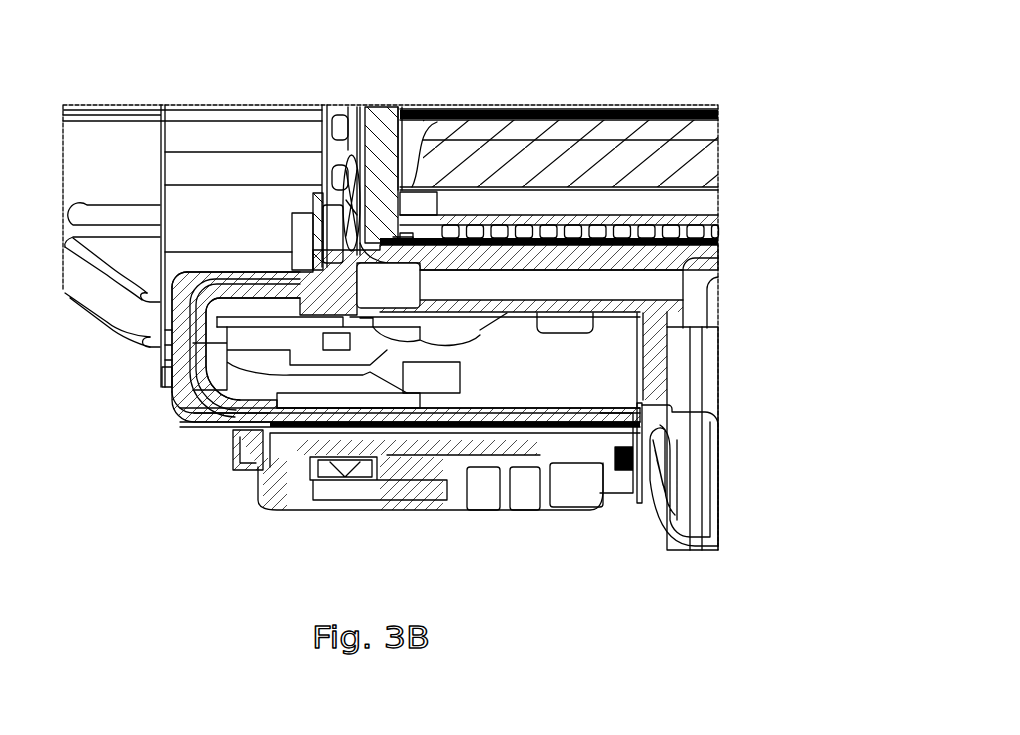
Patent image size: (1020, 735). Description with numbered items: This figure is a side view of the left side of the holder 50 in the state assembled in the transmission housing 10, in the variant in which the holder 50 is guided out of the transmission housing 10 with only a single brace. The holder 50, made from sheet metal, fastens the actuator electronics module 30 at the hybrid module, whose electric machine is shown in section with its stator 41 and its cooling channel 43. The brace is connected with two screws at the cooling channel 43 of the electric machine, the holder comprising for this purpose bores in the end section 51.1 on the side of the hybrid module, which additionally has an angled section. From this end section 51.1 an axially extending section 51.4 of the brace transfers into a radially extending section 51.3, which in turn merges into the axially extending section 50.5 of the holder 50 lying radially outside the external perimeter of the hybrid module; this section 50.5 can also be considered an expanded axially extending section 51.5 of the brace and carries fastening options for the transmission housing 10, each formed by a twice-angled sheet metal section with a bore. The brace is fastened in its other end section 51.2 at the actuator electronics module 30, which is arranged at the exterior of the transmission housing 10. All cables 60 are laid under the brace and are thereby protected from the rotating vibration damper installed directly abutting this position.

The transmission housing 10 is at (680, 350).
The actuator electronics module 30 is at (352, 488).
The stator 41 is at (687, 160).
The cooling channel 43 is at (375, 142).
The holder 50 is at (162, 343).
The axially extending section 50.5 is at (223, 425).
The end section 51.1 is at (252, 241).
The end section 51.2 is at (377, 433).
The radially extending section 51.3 is at (168, 397).
The axially extending section 51.4 is at (217, 275).
The expanded axially extending section 51.5 is at (223, 425).
The cables 60 is at (338, 180).